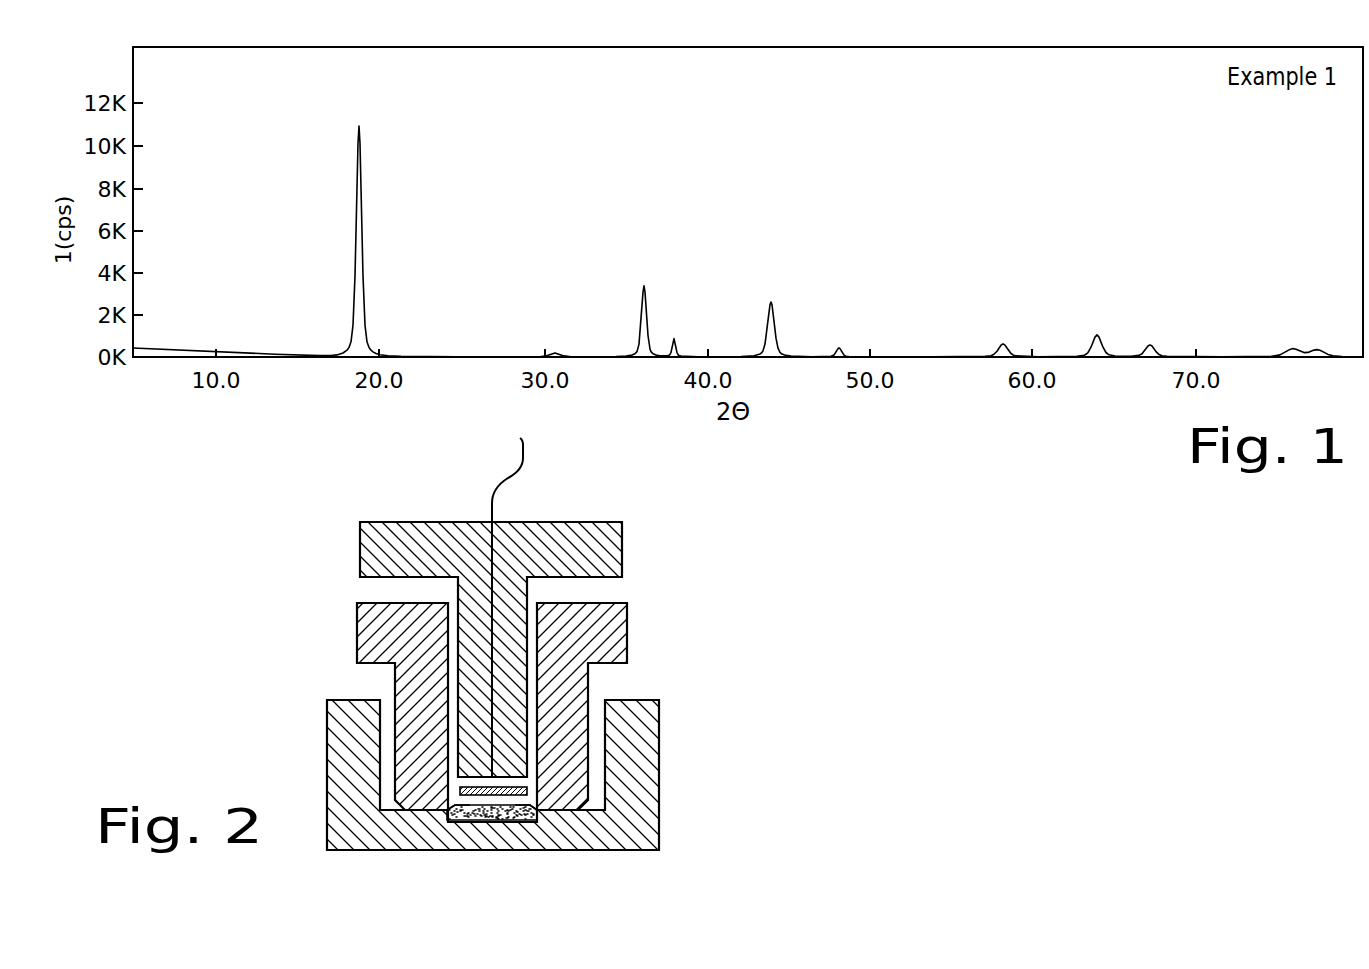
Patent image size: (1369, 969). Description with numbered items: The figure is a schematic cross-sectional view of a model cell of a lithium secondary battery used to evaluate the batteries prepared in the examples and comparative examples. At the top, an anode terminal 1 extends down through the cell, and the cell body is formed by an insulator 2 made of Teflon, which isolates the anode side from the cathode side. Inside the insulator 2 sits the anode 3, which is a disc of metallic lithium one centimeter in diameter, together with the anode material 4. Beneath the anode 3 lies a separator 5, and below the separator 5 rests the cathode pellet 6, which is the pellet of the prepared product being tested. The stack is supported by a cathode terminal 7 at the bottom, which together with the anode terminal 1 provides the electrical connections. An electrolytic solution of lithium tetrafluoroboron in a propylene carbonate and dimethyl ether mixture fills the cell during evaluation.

The anode terminal 1 is at (525, 463).
The insulator 2 is at (610, 557).
The anode 3 is at (527, 765).
The anode material 4 is at (493, 792).
The separator 5 is at (473, 800).
The cathode pellet 6 is at (517, 812).
The cathode terminal 7 is at (637, 832).